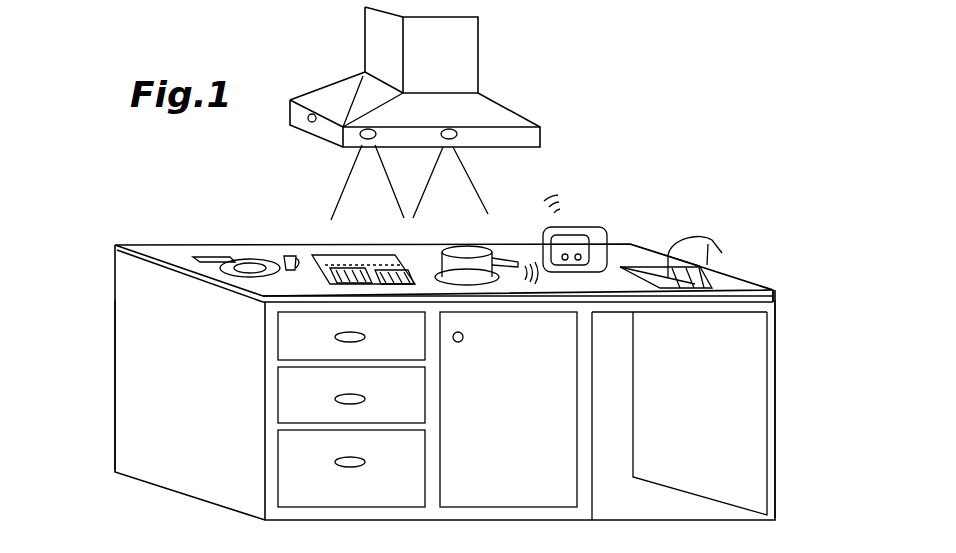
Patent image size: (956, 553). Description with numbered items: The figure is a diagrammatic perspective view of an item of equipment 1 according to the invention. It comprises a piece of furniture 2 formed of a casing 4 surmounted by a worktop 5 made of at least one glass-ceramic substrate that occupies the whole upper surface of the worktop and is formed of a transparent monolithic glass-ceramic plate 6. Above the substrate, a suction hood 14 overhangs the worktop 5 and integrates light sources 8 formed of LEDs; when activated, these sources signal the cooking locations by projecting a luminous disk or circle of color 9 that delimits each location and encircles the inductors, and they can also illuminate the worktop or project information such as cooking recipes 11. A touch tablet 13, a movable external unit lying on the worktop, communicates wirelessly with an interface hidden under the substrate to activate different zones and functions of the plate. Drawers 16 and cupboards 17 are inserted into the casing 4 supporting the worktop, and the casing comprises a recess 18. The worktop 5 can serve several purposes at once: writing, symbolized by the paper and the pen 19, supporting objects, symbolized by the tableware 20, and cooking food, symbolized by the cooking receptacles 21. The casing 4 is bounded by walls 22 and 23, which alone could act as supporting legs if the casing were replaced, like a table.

The item of equipment 1 is at (700, 178).
The piece of furniture 2 is at (157, 242).
The casing 4 is at (140, 316).
The worktop 5 is at (633, 241).
The glass-ceramic plate 6 is at (767, 289).
The light sources 8 is at (310, 114).
The luminous disk or circle of color 9 is at (518, 300).
The cooking recipes 11 is at (353, 252).
The touch tablet 13 is at (593, 227).
The suction hood 14 is at (467, 53).
The drawers 16 is at (290, 480).
The cupboards 17 is at (567, 473).
The recess 18 is at (628, 396).
The paper and pen 19 is at (719, 248).
The tableware 20 is at (283, 243).
The cooking receptacles 21 is at (468, 247).
The wall 22 is at (778, 387).
The wall 23 is at (124, 423).